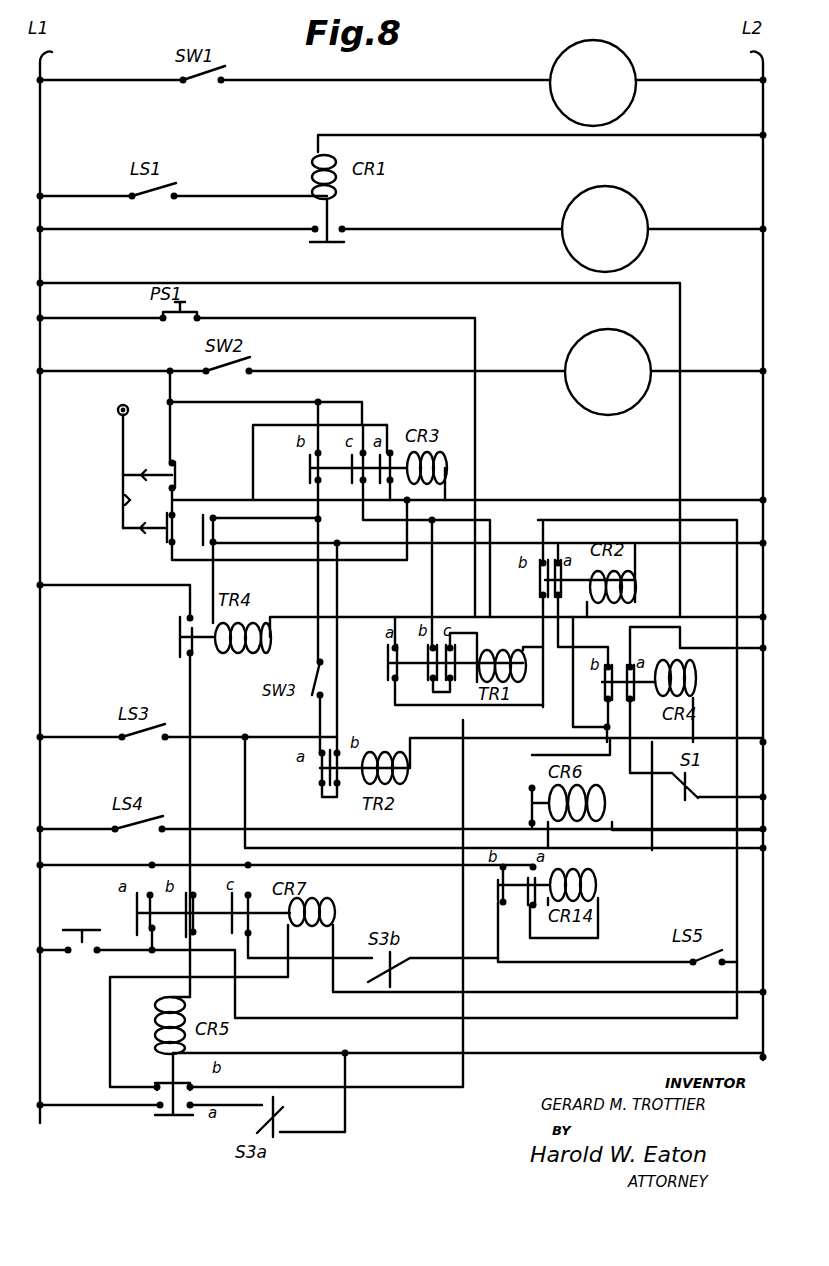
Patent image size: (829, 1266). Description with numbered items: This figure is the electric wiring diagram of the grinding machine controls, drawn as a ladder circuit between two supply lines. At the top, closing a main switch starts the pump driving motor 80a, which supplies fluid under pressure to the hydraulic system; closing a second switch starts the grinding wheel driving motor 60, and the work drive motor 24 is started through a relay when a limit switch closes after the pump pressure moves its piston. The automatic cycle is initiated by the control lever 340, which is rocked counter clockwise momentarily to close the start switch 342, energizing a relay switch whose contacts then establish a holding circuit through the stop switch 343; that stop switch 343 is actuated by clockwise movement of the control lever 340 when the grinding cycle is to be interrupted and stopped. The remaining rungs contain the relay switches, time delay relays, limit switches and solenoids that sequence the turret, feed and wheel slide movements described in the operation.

The pump driving motor 80a is at (552, 73).
The work drive motor 24 is at (580, 212).
The grinding wheel driving motor 60 is at (582, 354).
The control lever 340 is at (123, 435).
The stop switch 343 is at (168, 476).
The start switch 342 is at (166, 535).